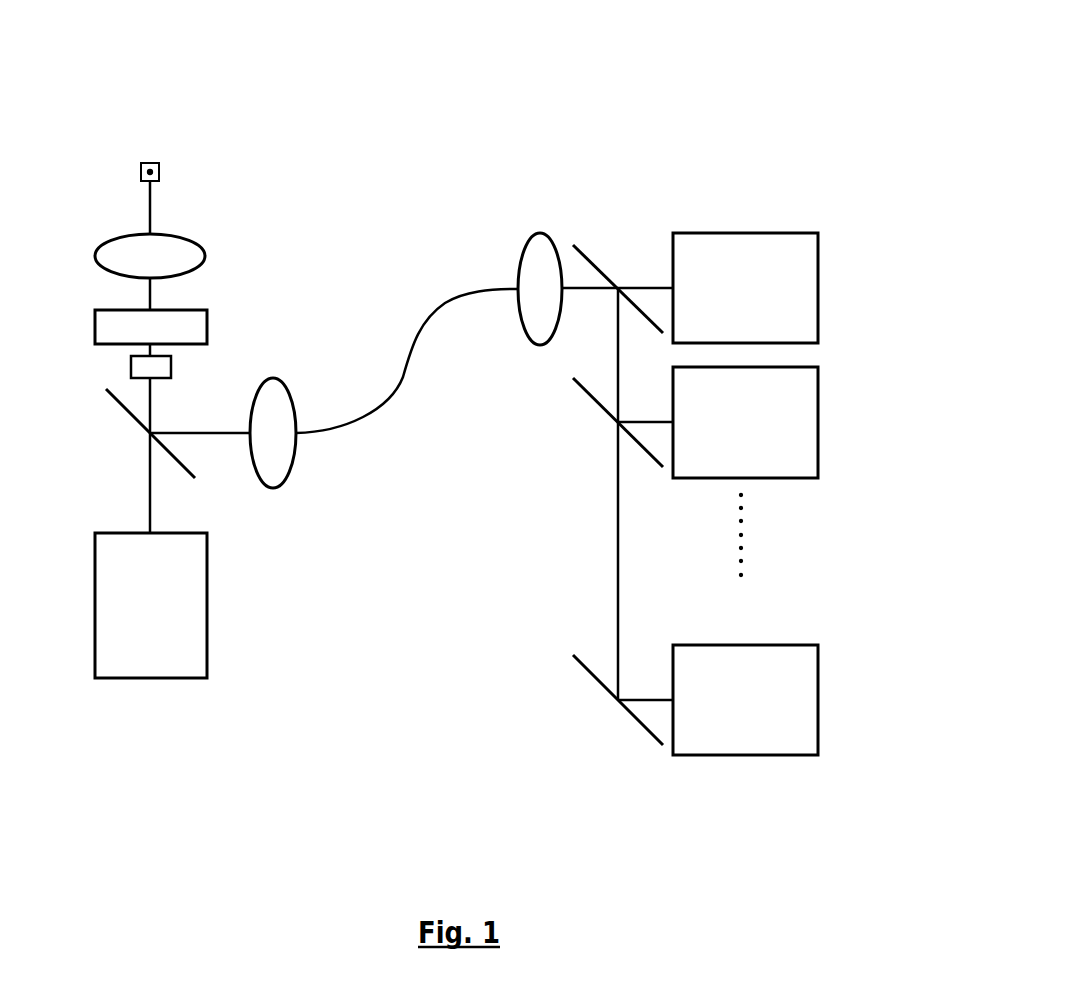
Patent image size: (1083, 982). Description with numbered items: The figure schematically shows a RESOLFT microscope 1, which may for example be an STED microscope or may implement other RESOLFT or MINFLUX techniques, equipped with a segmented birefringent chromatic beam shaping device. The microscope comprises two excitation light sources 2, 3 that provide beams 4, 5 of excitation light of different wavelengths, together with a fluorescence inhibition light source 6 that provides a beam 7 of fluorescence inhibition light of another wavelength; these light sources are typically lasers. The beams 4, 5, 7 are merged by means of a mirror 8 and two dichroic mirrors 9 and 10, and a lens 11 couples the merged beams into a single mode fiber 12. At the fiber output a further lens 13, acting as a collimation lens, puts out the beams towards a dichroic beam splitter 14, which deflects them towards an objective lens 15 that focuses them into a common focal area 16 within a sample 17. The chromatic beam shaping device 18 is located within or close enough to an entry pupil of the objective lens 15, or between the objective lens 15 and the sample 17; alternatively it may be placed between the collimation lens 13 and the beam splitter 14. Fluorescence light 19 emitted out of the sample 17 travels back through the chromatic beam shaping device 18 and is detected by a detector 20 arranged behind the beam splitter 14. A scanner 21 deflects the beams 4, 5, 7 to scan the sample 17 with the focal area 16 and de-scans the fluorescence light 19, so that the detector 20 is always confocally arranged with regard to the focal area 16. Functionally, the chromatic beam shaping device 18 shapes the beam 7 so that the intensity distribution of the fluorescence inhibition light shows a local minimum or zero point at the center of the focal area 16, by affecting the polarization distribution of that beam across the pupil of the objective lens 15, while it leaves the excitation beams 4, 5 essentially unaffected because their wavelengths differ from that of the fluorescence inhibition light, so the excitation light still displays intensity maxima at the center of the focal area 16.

The RESOLFT microscope 1 is at (691, 151).
The excitation light source 2 is at (818, 288).
The excitation light source 3 is at (818, 418).
The beam of excitation light 4 is at (643, 286).
The beam of excitation light 5 is at (642, 420).
The fluorescence inhibition light source 6 is at (818, 697).
The beam of fluorescence inhibition light 7 is at (642, 697).
The mirror 8 is at (593, 677).
The dichroic mirror 9 is at (595, 402).
The dichroic mirror 10 is at (590, 258).
The lens 11 is at (523, 248).
The single mode fiber 12 is at (388, 403).
The lens 13 is at (291, 470).
The dichroic beam splitter 14 is at (128, 415).
The objective lens 15 is at (195, 238).
The focal area 16 is at (143, 171).
The sample 17 is at (160, 171).
The chromatic beam shaping device 18 is at (207, 318).
The fluorescence light 19 is at (150, 482).
The detector 20 is at (207, 592).
The scanner 21 is at (131, 363).